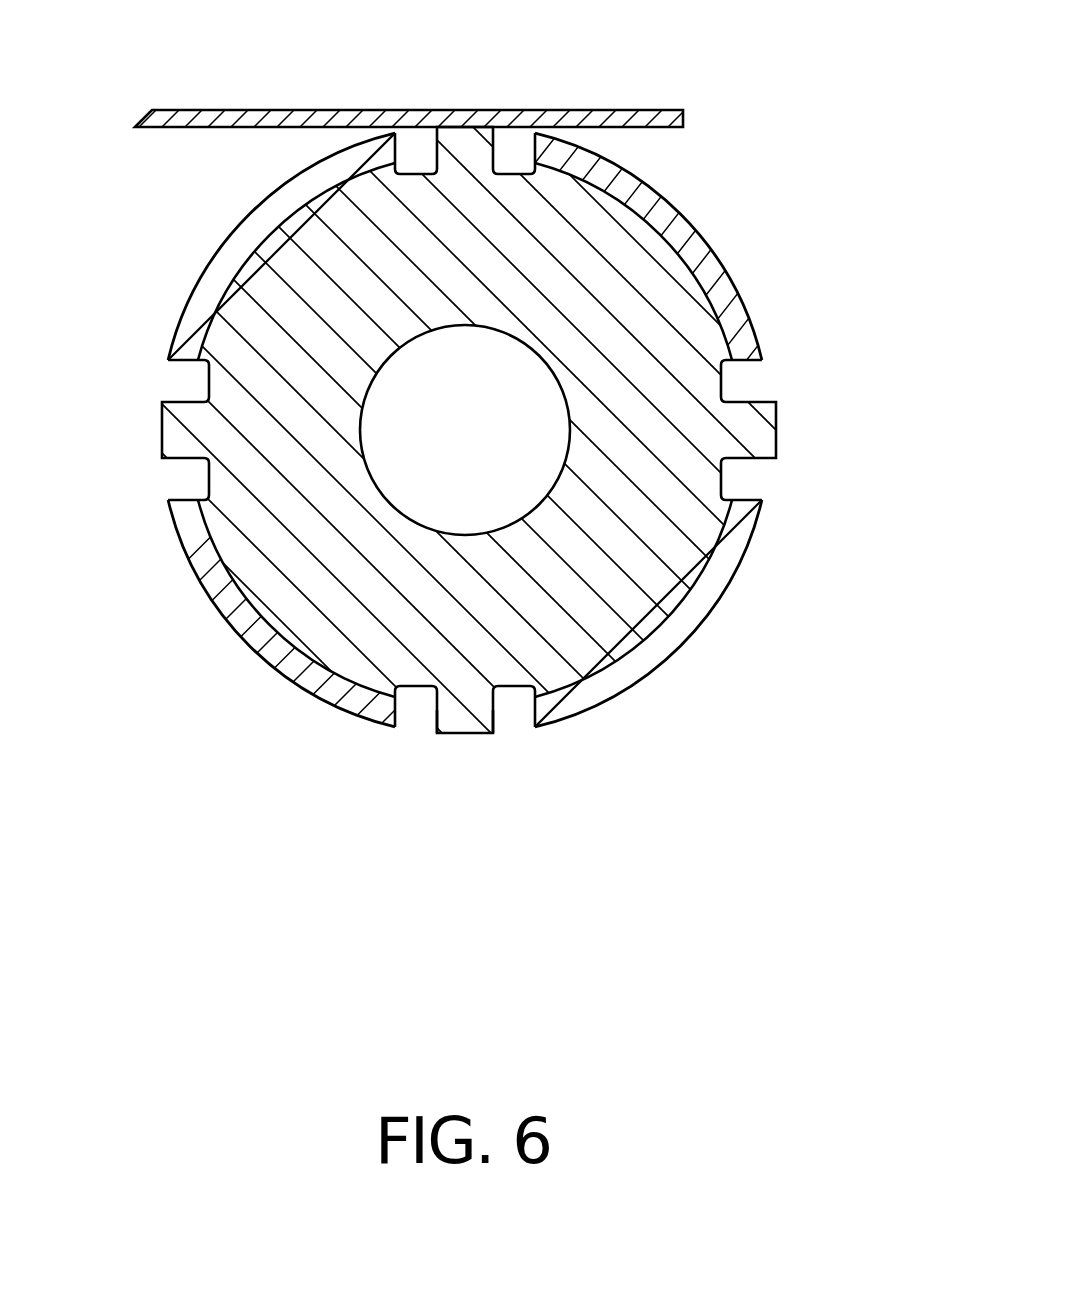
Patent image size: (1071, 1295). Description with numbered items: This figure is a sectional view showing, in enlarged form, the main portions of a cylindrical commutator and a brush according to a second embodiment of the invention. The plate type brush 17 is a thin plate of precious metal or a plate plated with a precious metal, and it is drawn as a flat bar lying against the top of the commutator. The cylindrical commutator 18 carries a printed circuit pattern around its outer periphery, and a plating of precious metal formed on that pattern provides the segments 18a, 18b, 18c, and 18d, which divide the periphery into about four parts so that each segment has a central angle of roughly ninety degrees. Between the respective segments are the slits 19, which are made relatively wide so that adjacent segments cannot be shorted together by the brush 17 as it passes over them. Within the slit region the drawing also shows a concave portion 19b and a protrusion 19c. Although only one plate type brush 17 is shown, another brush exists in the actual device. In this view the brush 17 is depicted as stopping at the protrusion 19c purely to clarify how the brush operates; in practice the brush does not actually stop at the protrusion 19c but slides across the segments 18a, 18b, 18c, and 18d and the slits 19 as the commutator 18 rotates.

The plate type brush 17 is at (638, 110).
The cylindrical commutator 18 is at (630, 250).
The segment 18a is at (745, 322).
The segment 18b is at (655, 652).
The segment 18c is at (237, 633).
The segment 18d is at (207, 277).
The slit 19 is at (793, 417).
The concave portion 19b is at (418, 718).
The protrusion 19c is at (460, 712).